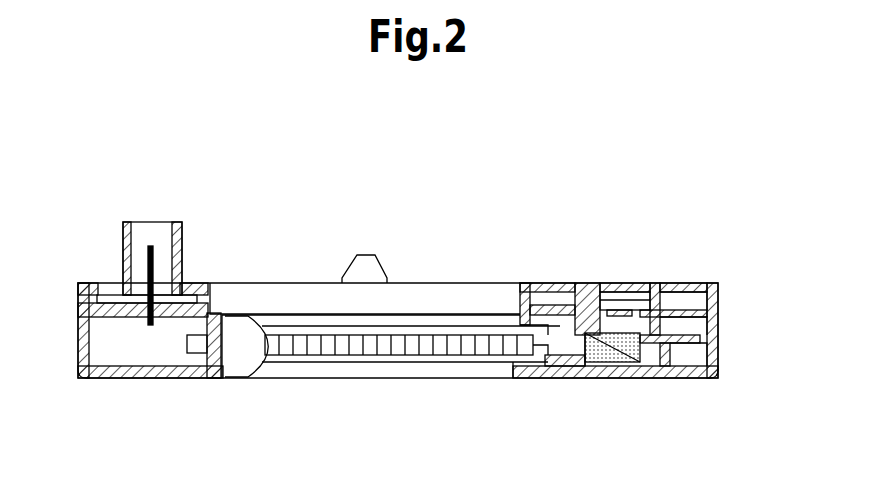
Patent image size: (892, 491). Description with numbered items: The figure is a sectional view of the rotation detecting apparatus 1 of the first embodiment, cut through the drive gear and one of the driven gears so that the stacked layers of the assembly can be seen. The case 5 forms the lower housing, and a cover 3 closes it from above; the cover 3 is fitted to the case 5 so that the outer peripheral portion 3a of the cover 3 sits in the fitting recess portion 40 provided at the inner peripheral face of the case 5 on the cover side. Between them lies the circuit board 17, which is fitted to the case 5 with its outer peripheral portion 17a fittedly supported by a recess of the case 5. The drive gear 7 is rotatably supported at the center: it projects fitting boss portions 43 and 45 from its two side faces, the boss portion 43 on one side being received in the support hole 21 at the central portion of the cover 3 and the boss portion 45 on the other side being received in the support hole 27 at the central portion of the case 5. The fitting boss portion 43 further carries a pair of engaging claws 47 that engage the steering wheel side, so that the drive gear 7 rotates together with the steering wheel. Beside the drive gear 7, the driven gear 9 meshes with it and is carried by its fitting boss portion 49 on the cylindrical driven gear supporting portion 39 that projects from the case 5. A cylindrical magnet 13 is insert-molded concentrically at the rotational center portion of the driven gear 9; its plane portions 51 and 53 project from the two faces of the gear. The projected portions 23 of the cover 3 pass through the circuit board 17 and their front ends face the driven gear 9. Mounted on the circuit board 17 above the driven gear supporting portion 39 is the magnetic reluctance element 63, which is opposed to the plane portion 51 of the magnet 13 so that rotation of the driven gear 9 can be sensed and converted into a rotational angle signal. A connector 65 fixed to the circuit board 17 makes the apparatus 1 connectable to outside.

The rotation detecting apparatus 1 is at (409, 178).
The cover 3 is at (669, 275).
The outer peripheral portion of the cover 3a is at (718, 296).
The case 5 is at (683, 383).
The drive gear 7 is at (388, 345).
The driven gear 9 is at (718, 350).
The magnet 13 is at (612, 378).
The circuit board 17 is at (693, 283).
The outer peripheral portion of the circuit board 17a is at (718, 320).
The support hole 21 is at (510, 295).
The projected portion 23 is at (642, 283).
The support hole 27 is at (490, 378).
The driven gear supporting portion 39 is at (535, 378).
The fitting recess portion 40 is at (712, 283).
The fitting boss portion 43 is at (295, 300).
The fitting boss portion 45 is at (283, 378).
The engaging claw 47 is at (362, 253).
The fitting boss portion 49 is at (578, 378).
The plane portion 51 is at (612, 283).
The plane portion 53 is at (628, 378).
The magnetic reluctance element 63 is at (572, 283).
The connector 65 is at (122, 243).